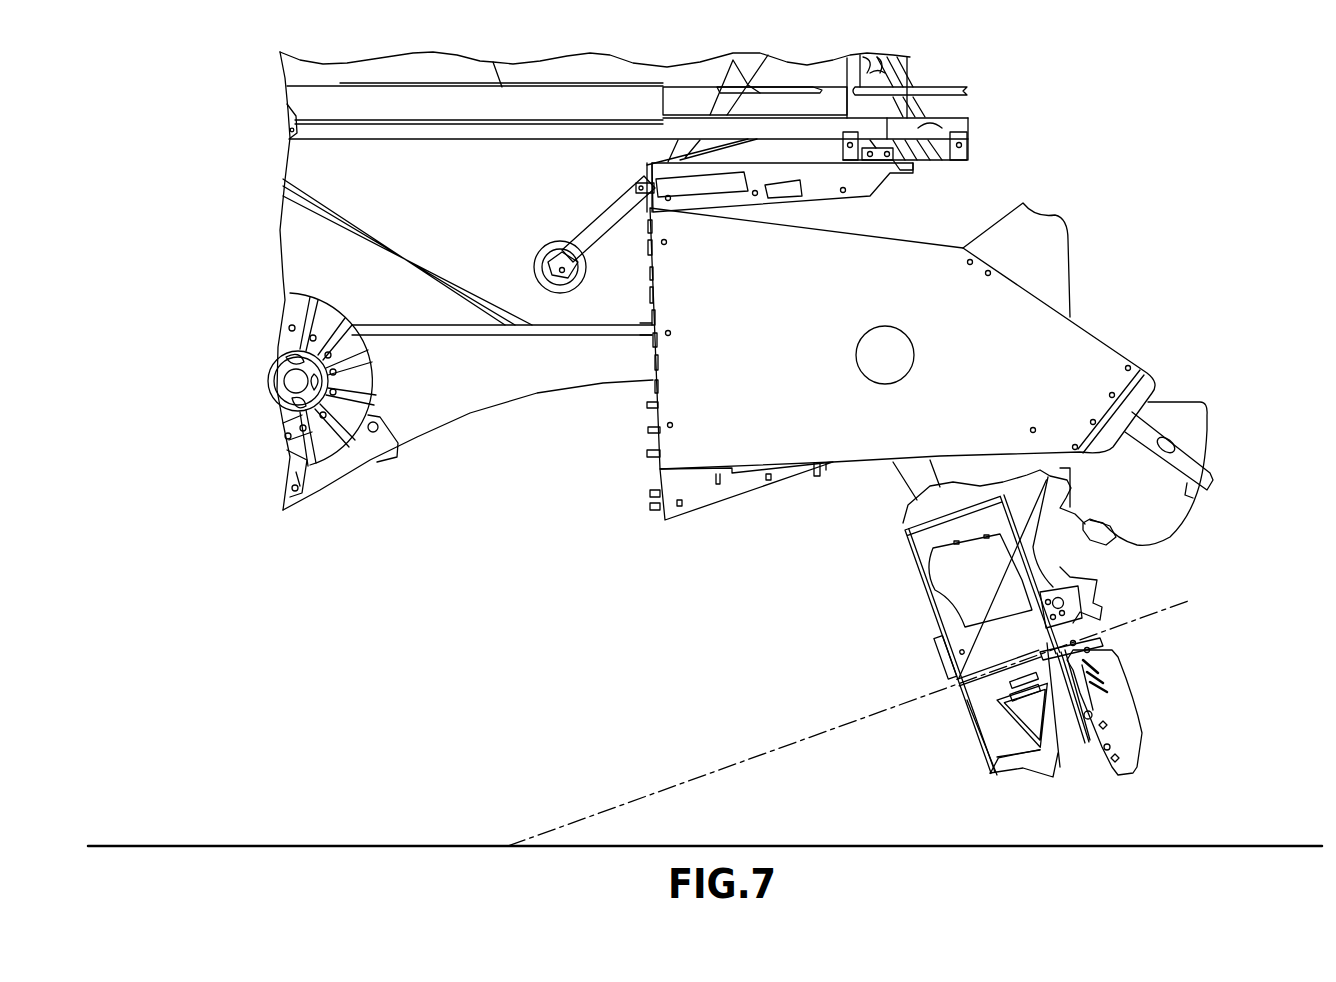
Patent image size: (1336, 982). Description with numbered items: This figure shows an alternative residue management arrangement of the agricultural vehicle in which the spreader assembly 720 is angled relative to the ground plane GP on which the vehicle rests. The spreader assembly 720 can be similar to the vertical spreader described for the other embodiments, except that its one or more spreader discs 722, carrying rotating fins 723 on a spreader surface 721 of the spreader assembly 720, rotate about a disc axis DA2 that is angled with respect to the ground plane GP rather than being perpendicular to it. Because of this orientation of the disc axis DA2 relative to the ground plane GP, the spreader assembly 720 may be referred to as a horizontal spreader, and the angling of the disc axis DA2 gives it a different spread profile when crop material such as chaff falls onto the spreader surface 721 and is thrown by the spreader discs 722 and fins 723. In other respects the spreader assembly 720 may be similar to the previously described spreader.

The spreader assembly 720 is at (1067, 773).
The spreader surface 721 is at (940, 660).
The spreader discs 722 is at (957, 681).
The fins 723 is at (1065, 718).
The disc axis DA2 is at (1184, 604).
The ground plane GP is at (898, 846).